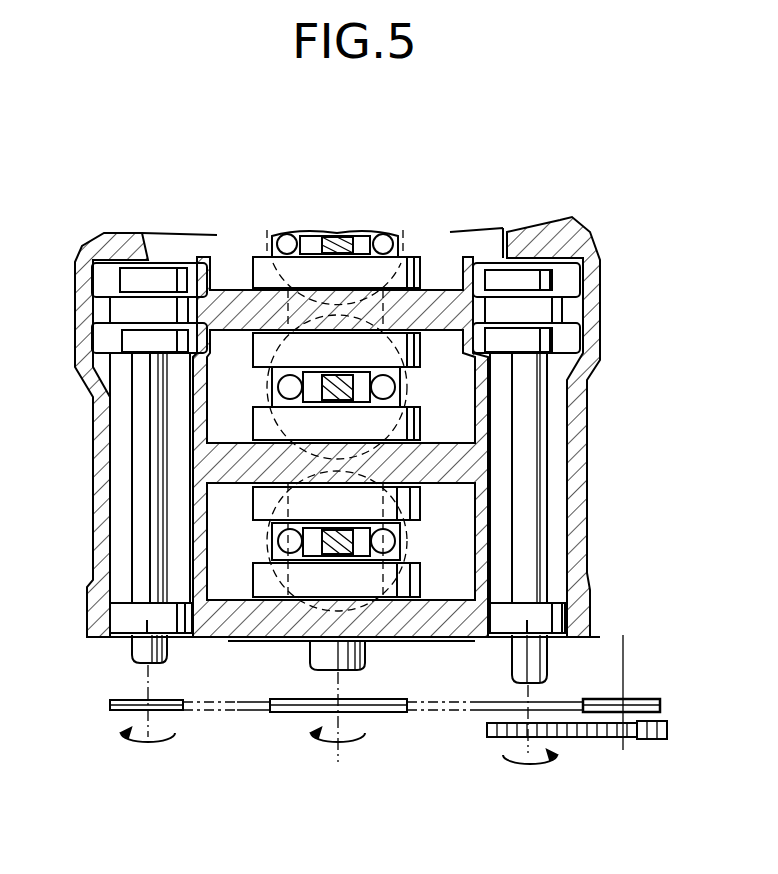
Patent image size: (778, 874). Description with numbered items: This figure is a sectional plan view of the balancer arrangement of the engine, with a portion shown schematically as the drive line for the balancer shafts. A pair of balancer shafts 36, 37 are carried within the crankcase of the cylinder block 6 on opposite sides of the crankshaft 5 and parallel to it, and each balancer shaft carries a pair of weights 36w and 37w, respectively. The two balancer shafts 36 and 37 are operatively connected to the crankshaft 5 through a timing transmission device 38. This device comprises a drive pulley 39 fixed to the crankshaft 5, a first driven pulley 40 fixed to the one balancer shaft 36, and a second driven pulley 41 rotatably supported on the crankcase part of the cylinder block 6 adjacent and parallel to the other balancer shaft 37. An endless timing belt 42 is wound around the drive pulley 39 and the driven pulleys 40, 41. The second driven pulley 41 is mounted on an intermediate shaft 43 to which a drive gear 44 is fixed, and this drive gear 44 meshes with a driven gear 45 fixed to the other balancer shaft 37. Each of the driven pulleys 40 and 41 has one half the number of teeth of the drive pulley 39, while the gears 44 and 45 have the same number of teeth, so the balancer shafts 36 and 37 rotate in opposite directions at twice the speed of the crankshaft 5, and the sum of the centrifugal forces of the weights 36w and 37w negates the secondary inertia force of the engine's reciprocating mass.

The crankshaft 5 is at (310, 656).
The cylinder block 6 is at (93, 452).
The balancer shaft 36 is at (137, 500).
The weight 36w is at (157, 277).
The balancer shaft 37 is at (540, 470).
The weight 37w is at (518, 273).
The timing transmission device 38 is at (413, 714).
The drive pulley 39 is at (395, 700).
The first driven pulley 40 is at (182, 699).
The second driven pulley 41 is at (657, 700).
The endless timing belt 42 is at (242, 713).
The intermediate shaft 43 is at (622, 663).
The drive gear 44 is at (648, 739).
The driven gear 45 is at (487, 737).